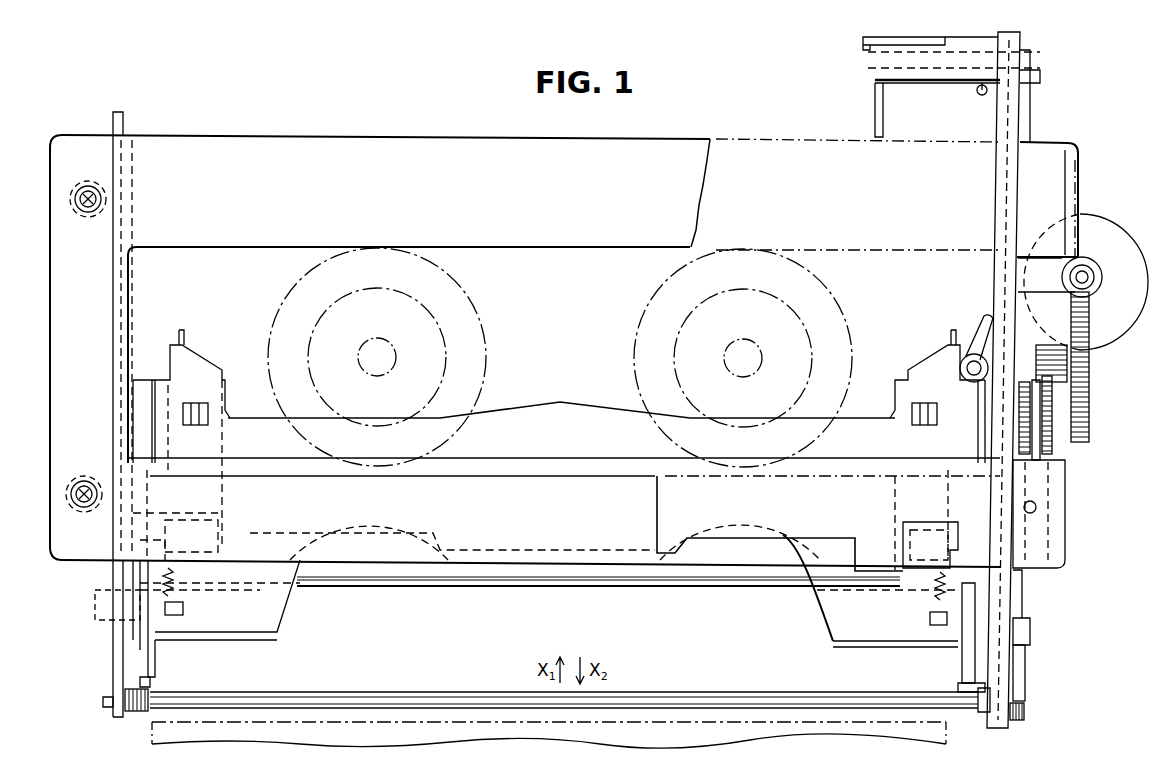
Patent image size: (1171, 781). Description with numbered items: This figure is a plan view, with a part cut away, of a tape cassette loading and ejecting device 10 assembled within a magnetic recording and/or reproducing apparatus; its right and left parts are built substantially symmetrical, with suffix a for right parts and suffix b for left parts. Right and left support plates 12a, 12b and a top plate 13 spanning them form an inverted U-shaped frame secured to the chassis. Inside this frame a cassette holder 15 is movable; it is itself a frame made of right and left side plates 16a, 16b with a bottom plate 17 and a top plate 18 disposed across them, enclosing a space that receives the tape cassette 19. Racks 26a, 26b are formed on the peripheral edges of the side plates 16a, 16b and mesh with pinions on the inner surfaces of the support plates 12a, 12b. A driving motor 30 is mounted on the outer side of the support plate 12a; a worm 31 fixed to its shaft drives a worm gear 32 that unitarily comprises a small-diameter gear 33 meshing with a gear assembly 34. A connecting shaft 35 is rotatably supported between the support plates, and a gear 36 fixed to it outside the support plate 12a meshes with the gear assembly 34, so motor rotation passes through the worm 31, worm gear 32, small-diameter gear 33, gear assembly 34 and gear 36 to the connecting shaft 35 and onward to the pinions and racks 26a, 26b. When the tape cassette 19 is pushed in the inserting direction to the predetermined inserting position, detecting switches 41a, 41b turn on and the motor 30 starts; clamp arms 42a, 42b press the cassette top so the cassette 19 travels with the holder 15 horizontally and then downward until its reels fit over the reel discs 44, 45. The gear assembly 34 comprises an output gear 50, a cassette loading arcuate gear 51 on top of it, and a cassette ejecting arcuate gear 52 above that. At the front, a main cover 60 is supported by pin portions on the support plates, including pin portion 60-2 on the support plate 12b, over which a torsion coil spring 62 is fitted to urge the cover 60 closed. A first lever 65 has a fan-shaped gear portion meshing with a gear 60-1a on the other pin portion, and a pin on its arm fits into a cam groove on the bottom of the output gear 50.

The tape cassette loading and ejecting device 10 is at (777, 115).
The right support plate 12a is at (1018, 39).
The left support plate 12b is at (121, 128).
The top plate 13 is at (515, 139).
The cassette holder 15 is at (581, 396).
The right side plate 16a is at (962, 660).
The left side plate 16b is at (150, 659).
The bottom plate 17 is at (826, 606).
The top plate 18 is at (700, 540).
The tape cassette 19 is at (670, 705).
The rack 26a is at (958, 690).
The rack 26b is at (142, 688).
The driving motor 30 is at (1100, 213).
The worm 31 is at (1099, 278).
The worm gear 32 is at (1092, 314).
The small-diameter gear 33 is at (1043, 345).
The gear assembly 34 is at (1085, 427).
The connecting shaft 35 is at (728, 586).
The gear 36 is at (1033, 625).
The detecting switch 41a is at (940, 621).
The detecting switch 41b is at (127, 600).
The clamp arm 42a is at (926, 540).
The clamp arm 42b is at (213, 524).
The reel disc 44 is at (470, 316).
The reel disc 45 is at (655, 302).
The output gear 50 is at (1012, 380).
The cassette loading arcuate gear 51 is at (1031, 397).
The cassette ejecting arcuate gear 52 is at (1053, 410).
The main cover 60 is at (480, 692).
The gear 60-1a is at (1018, 721).
The pin portion 60-2 is at (107, 702).
The torsion coil spring 62 is at (138, 712).
The first lever 65 is at (1026, 676).